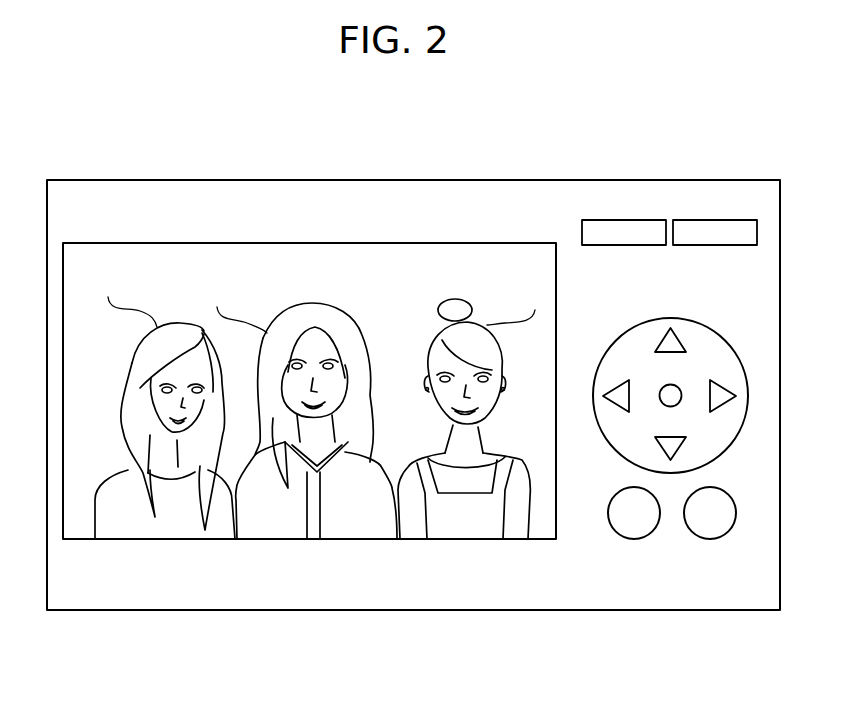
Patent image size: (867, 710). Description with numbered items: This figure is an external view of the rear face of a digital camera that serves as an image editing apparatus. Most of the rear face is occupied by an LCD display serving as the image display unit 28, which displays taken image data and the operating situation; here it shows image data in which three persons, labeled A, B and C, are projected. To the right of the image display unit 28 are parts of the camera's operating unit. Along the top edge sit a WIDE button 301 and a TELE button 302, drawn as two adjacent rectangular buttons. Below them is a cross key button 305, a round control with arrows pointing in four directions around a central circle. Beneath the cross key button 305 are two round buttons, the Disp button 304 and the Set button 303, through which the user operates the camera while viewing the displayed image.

The image display unit 28 is at (440, 243).
The WIDE button 301 is at (592, 222).
The TELE button 302 is at (748, 222).
The Set button 303 is at (695, 527).
The Disp button 304 is at (617, 527).
The cross key button 305 is at (737, 417).